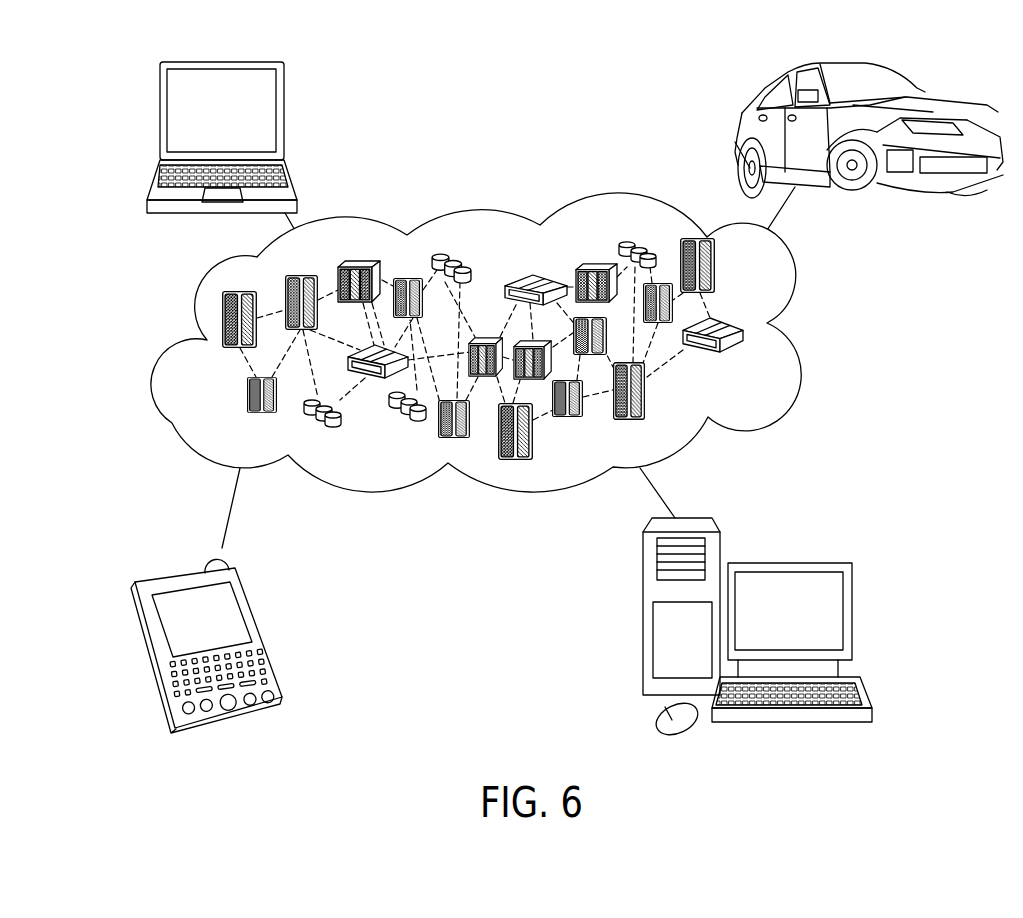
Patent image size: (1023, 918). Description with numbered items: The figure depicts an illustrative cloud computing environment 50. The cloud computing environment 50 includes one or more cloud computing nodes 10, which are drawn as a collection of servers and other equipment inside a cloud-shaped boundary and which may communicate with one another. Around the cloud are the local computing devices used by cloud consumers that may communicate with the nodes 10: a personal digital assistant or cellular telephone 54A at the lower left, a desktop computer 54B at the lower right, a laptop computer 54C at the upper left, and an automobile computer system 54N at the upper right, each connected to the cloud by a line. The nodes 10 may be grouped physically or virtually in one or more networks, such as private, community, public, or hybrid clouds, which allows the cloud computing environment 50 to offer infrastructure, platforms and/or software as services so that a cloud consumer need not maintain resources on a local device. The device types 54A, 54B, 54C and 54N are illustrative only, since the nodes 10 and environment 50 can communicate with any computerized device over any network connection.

The cloud computing environment 50 is at (805, 277).
The cloud computing node 10 is at (770, 378).
The personal digital assistant or cellular telephone 54A is at (253, 610).
The desktop computer 54B is at (852, 610).
The laptop computer 54C is at (285, 113).
The automobile computer system 54N is at (915, 80).